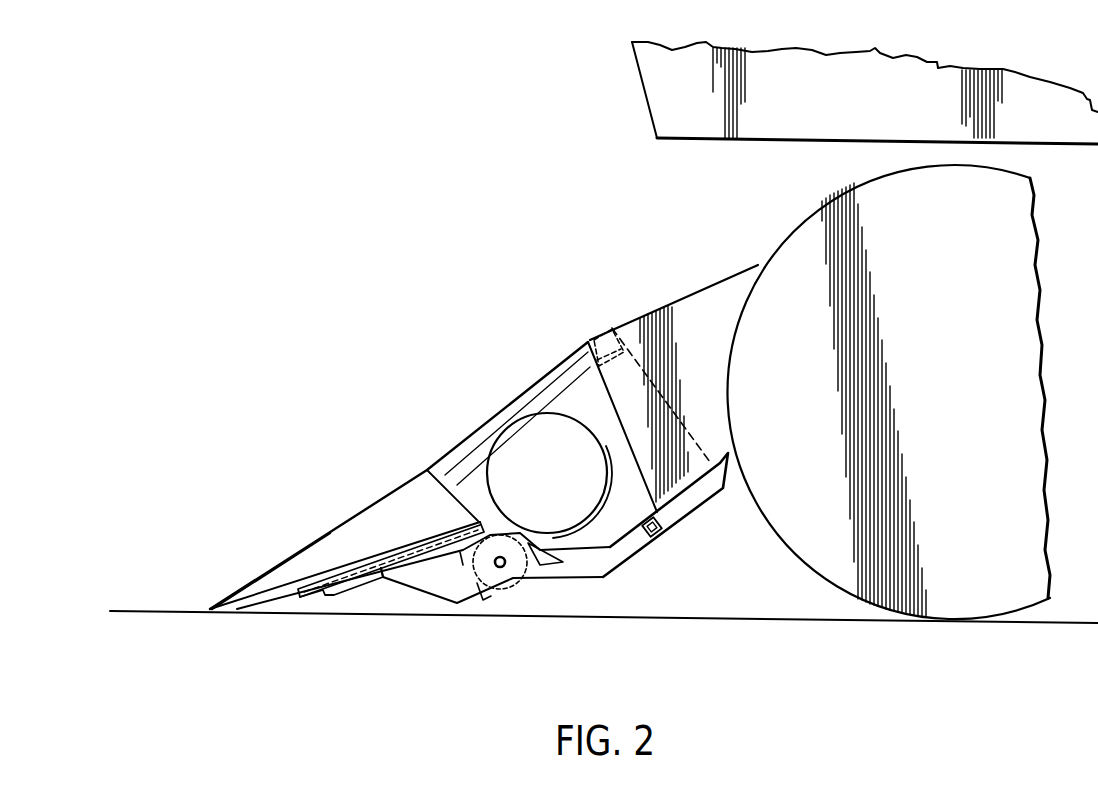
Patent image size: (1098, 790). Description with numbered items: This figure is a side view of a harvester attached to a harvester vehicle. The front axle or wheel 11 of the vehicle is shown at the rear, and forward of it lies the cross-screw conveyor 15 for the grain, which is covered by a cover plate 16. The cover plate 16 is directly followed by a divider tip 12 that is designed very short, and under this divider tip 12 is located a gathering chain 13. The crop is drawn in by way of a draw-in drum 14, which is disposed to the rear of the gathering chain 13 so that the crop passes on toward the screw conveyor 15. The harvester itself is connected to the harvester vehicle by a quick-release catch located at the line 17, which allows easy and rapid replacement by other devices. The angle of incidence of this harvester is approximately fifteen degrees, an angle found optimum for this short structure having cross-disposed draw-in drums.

The front axle or wheel 11 is at (927, 274).
The divider tip 12 is at (318, 541).
The gathering chain 13 is at (387, 560).
The draw-in drum 14 is at (507, 575).
The cross-screw conveyor 15 is at (578, 500).
The cover plate 16 is at (512, 405).
The line 17 is at (590, 340).